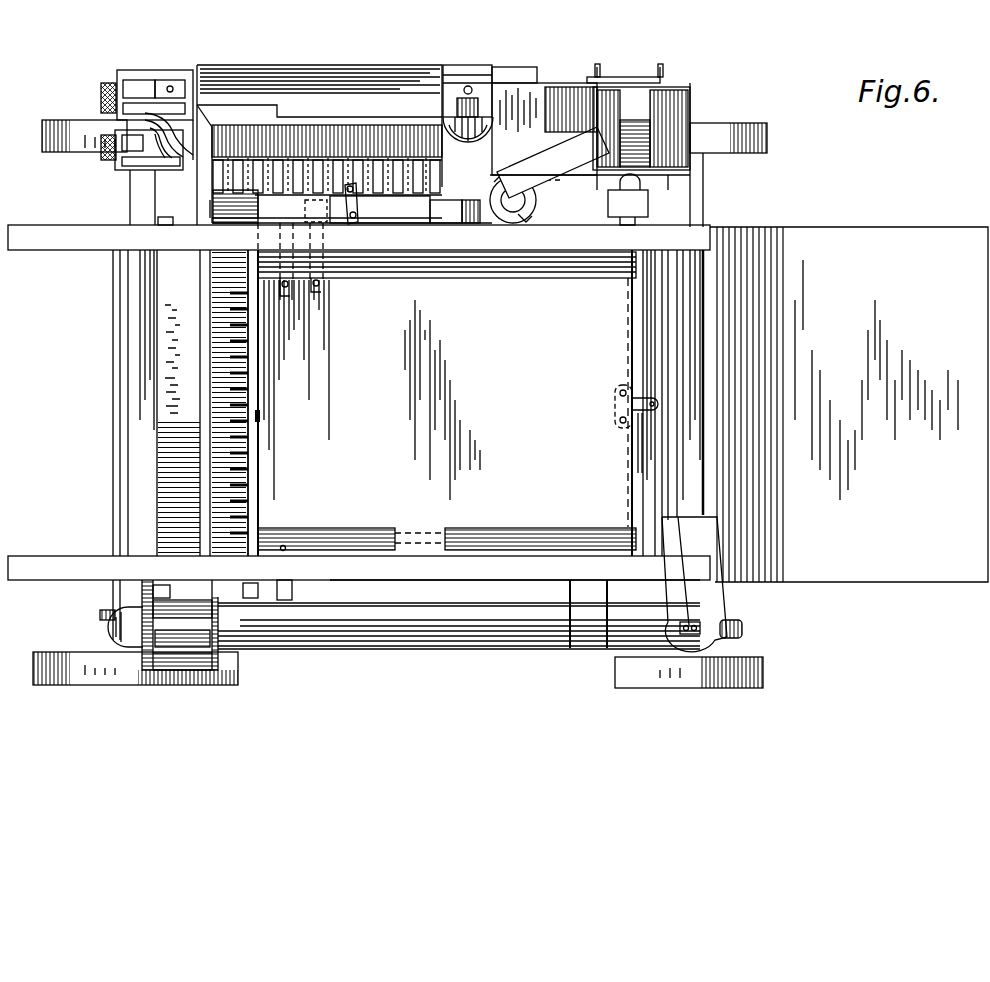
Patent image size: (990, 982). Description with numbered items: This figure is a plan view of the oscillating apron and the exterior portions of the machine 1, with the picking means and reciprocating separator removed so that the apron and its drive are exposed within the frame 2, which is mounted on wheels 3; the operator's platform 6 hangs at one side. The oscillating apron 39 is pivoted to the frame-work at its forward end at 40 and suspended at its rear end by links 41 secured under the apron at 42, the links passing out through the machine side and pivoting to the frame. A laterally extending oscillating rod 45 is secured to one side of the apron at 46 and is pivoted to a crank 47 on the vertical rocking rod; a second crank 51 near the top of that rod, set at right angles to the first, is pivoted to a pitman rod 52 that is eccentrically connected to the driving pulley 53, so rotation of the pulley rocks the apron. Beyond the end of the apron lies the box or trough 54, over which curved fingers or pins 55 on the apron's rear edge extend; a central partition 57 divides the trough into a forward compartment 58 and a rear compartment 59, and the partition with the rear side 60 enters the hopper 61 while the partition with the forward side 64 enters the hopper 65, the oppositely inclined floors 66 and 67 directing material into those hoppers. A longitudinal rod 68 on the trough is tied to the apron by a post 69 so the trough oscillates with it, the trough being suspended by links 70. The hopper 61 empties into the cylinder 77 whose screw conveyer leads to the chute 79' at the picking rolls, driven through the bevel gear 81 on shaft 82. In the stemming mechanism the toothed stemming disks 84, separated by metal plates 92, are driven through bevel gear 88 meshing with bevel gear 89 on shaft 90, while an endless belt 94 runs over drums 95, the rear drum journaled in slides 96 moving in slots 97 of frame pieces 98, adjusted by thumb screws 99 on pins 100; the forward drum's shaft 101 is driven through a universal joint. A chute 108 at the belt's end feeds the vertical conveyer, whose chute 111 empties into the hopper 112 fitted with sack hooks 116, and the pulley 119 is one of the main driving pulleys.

The machine 1 is at (303, 160).
The frame 2 is at (67, 237).
The wheels 3 is at (42, 137).
The platform 6 is at (855, 234).
The oscillating apron 39 is at (480, 403).
The pivot 40 is at (632, 423).
The links 41 is at (293, 280).
The link attachment 42 is at (318, 290).
The oscillating rod 45 is at (353, 223).
The rod attachment 46 is at (380, 297).
The crank 47 is at (323, 213).
The crank 51 is at (360, 207).
The pitman rod 52 is at (380, 208).
The driving pulley 53 is at (447, 210).
The box or trough 54 is at (167, 382).
The fingers or pins 55 is at (247, 458).
The central partition 57 is at (207, 310).
The forward compartment 58 is at (167, 350).
The compartment 59 is at (220, 417).
The rear side 60 is at (157, 463).
The hopper 61 is at (187, 660).
The forward side 64 is at (300, 165).
The hopper 65 is at (243, 117).
The floor 66 is at (213, 273).
The floor 67 is at (167, 500).
The longitudinal rod 68 is at (253, 378).
The post 69 is at (262, 415).
The links 70 is at (163, 217).
The cylinder 77 is at (512, 637).
The chute 79' is at (726, 584).
The bevel gear 81 is at (100, 615).
The shaft 82 is at (110, 515).
The stemming disks 84 is at (320, 170).
The bevel gear 88 is at (455, 182).
The bevel gear 89 is at (525, 211).
The shaft 90 is at (476, 220).
The metal strips or plates 92 is at (313, 167).
The endless belt or apron 94 is at (407, 130).
The drums 95 is at (193, 73).
The blocks or slides 96 is at (155, 87).
The slots 97 is at (130, 85).
The frame pieces 98 is at (117, 77).
The thumb screws 99 is at (102, 90).
The pins 100 is at (102, 98).
The shaft 101 is at (497, 180).
The chute 108 is at (533, 80).
The chute 111 is at (600, 132).
The hopper 112 is at (695, 92).
The hooks 116 is at (677, 63).
The pulley 119 is at (643, 207).